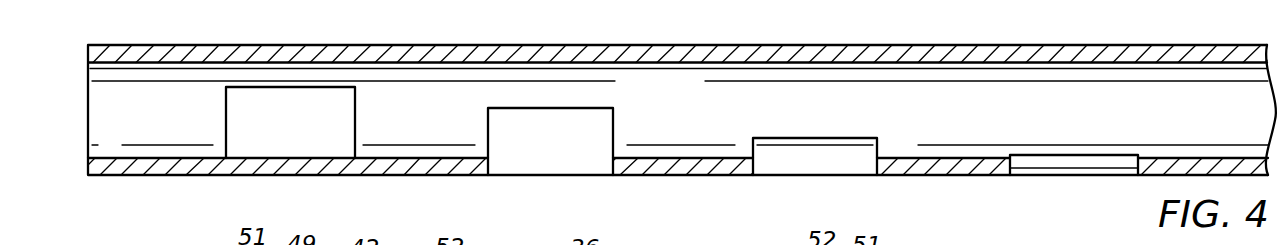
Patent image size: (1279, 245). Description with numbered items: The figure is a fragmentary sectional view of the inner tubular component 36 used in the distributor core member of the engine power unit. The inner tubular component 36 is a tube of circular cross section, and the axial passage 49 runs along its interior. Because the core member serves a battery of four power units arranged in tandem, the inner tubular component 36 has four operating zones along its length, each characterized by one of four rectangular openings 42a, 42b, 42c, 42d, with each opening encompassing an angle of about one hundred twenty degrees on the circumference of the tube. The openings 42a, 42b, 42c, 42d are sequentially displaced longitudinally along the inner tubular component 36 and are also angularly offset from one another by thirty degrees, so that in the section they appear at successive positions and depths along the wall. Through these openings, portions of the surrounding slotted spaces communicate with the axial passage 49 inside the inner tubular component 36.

The inner tubular component 36 is at (418, 125).
The axial passage 49 is at (866, 60).
The opening 42a is at (226, 100).
The opening 42b is at (594, 110).
The opening 42c is at (842, 144).
The opening 42d is at (1013, 168).